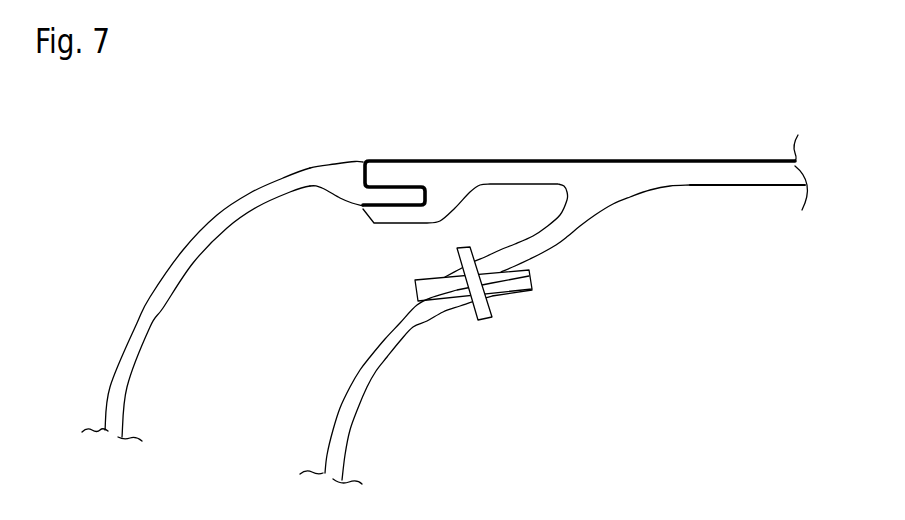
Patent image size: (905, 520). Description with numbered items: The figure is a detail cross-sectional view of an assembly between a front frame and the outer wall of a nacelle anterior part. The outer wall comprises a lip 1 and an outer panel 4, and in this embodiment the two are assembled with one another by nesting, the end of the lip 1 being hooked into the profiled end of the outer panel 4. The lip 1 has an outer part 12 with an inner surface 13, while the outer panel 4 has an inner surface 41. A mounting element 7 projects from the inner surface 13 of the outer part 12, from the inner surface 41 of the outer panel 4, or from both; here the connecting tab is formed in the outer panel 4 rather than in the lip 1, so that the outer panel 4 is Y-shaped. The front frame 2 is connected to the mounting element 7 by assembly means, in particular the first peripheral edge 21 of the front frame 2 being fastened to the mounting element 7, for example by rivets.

The lip 1 is at (217, 263).
The outer part 12 is at (338, 173).
The inner surface 13 is at (252, 210).
The outer panel 4 is at (585, 171).
The inner surface 41 is at (757, 186).
The mounting element 7 is at (548, 240).
The front frame 2 is at (386, 421).
The first peripheral edge 21 is at (499, 291).